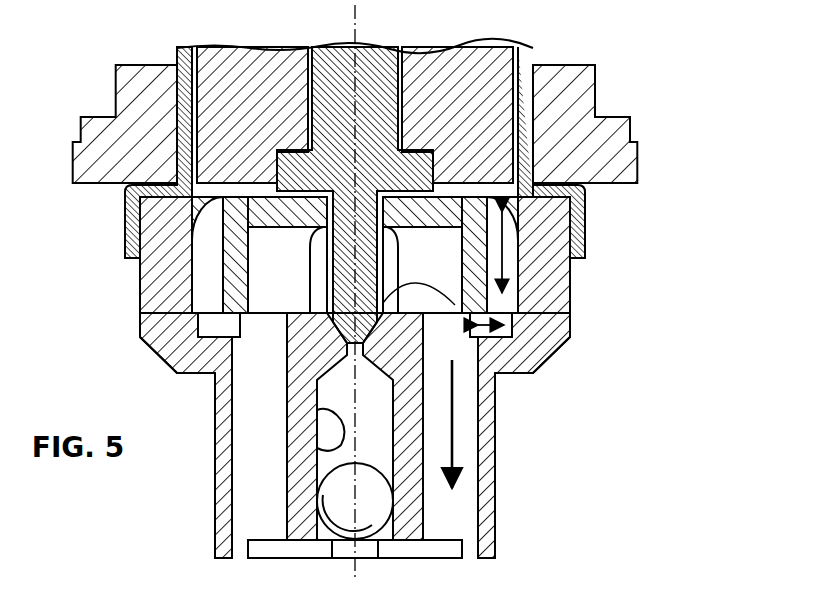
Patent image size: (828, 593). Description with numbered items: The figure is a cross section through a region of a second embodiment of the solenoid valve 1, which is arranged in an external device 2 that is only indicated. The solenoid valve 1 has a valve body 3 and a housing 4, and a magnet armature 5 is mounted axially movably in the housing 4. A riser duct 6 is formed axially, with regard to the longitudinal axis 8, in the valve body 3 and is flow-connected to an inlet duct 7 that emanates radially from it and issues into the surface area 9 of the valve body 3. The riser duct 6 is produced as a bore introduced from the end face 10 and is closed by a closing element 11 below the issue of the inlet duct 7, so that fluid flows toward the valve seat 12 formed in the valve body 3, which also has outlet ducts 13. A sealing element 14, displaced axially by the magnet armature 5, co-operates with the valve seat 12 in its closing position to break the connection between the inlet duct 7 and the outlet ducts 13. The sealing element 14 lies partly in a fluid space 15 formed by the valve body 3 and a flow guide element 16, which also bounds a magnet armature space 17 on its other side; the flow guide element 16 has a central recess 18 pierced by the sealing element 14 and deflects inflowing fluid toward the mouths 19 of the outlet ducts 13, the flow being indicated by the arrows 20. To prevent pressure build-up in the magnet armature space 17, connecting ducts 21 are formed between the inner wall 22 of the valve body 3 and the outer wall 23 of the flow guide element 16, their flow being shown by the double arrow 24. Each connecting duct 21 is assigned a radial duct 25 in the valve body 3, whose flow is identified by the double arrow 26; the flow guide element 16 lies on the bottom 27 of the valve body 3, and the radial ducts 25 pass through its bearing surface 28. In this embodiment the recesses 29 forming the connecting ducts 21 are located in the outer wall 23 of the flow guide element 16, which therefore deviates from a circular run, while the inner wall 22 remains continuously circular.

The solenoid valve 1 is at (617, 85).
The external device 2 is at (590, 135).
The valve body 3 is at (548, 322).
The housing 4 is at (525, 100).
The magnet armature 5 is at (462, 110).
The riser duct 6 is at (383, 412).
The inlet duct 7 is at (327, 428).
The longitudinal axis 8 is at (353, 26).
The surface area 9 is at (497, 512).
The end face 10 is at (222, 556).
The closing element 11 is at (335, 503).
The valve seat 12 is at (340, 347).
The outlet duct 13 is at (265, 478).
The sealing element 14 is at (383, 303).
The fluid space 15 is at (355, 255).
The flow guide element 16 is at (232, 259).
The magnet armature space 17 is at (242, 190).
The central recess 18 is at (384, 195).
The mouths 19 is at (264, 310).
The arrows 20 is at (443, 296).
The connecting duct 21 is at (207, 237).
The inner wall 22 is at (137, 215).
The outer wall 23 is at (220, 294).
The double arrow 24 is at (567, 257).
The radial duct 25 is at (205, 372).
The double arrow 26 is at (488, 328).
The bottom 27 is at (303, 305).
The bearing surface 28 is at (223, 317).
The recess 29 is at (207, 278).